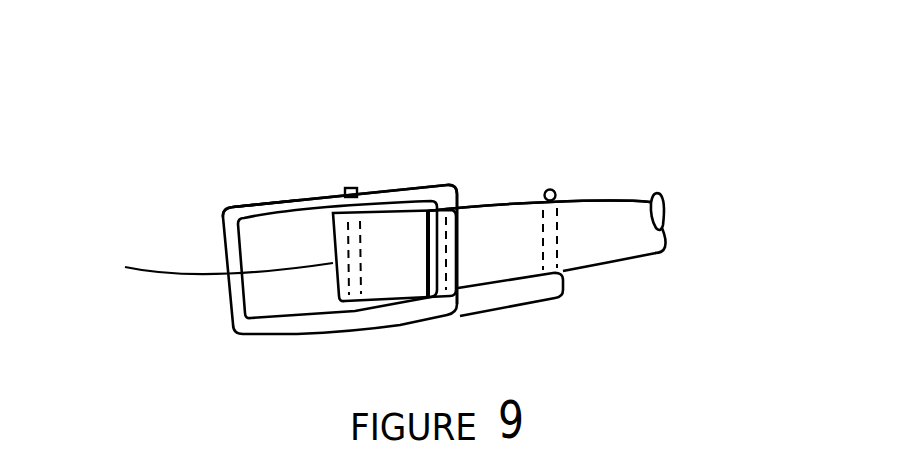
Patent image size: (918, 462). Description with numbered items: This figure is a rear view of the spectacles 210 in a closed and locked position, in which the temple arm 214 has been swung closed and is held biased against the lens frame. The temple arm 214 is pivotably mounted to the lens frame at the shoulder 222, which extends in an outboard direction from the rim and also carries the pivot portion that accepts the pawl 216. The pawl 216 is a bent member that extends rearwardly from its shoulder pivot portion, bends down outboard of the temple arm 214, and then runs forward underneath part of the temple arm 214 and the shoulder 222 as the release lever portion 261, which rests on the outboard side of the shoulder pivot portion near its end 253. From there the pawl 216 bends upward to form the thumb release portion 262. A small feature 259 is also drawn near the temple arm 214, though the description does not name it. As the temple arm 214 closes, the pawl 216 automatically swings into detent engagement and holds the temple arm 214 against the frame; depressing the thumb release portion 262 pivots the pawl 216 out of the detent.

The spectacles 210 is at (710, 86).
The temple arm 214 is at (635, 230).
The pawl 216 is at (276, 330).
The shoulder 222 is at (333, 263).
The end 253 is at (353, 189).
The ring 259 is at (556, 190).
The release lever portion 261 is at (352, 205).
The thumb release portion 262 is at (230, 237).